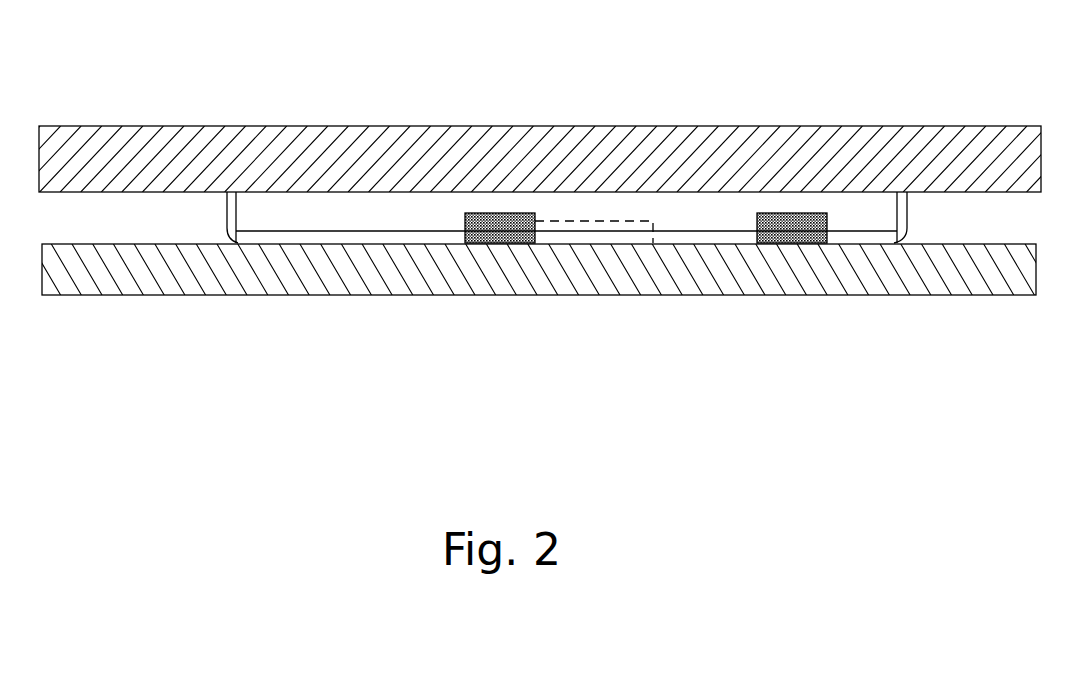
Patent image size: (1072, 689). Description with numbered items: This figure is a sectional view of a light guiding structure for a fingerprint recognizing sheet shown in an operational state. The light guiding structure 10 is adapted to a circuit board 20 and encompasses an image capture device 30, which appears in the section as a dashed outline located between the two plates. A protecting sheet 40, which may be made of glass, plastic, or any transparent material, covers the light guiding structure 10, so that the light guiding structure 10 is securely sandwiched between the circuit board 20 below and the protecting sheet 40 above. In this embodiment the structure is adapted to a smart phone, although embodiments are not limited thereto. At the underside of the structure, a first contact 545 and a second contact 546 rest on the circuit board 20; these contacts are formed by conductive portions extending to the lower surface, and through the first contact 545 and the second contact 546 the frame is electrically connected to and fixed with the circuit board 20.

The light guiding structure 10 is at (375, 213).
The circuit board 20 is at (173, 271).
The image capture device 30 is at (608, 221).
The protecting sheet 40 is at (542, 153).
The first contact 545 is at (500, 233).
The second contact 546 is at (798, 243).